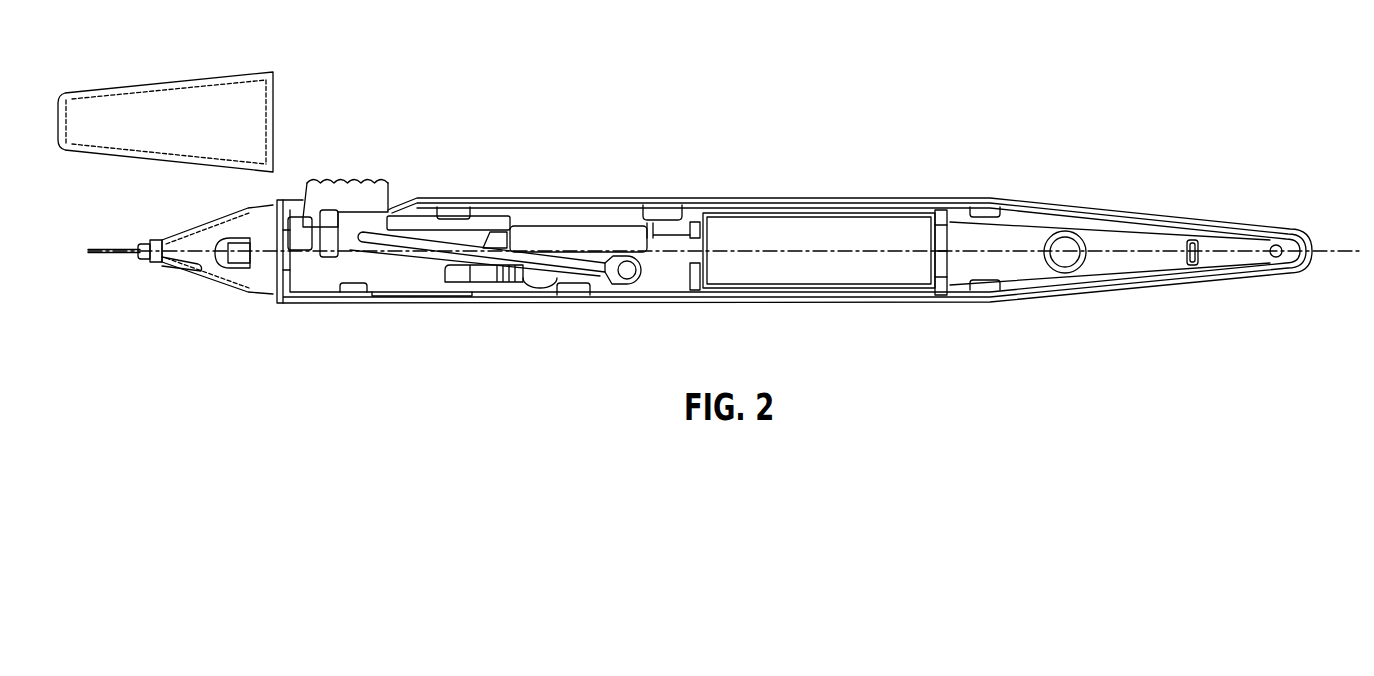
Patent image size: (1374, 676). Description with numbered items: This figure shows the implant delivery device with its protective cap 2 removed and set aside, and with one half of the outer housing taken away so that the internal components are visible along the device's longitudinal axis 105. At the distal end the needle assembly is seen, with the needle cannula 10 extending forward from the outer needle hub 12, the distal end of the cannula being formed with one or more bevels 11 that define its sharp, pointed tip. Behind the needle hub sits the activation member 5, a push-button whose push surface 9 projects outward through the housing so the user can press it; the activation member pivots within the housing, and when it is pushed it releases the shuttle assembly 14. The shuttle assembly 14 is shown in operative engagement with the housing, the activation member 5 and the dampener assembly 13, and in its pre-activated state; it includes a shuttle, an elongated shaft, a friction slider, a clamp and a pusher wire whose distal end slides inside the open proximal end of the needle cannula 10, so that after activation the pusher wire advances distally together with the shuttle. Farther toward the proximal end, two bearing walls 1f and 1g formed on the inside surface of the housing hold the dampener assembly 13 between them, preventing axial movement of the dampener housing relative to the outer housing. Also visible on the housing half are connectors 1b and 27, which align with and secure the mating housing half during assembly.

The protective cap 2 is at (186, 136).
The bevels 11 is at (100, 248).
The needle cannula 10 is at (128, 254).
The outer needle hub 12 is at (233, 235).
The push surface 9 is at (340, 181).
The activation member 5 is at (348, 205).
The shuttle assembly 14 is at (608, 242).
The bearing wall 1f is at (695, 223).
The dampener assembly 13 is at (853, 233).
The bearing wall 1g is at (942, 214).
The connector 1b is at (1068, 238).
The longitudinal axis 105 is at (1328, 248).
The connectors 27 is at (355, 293).